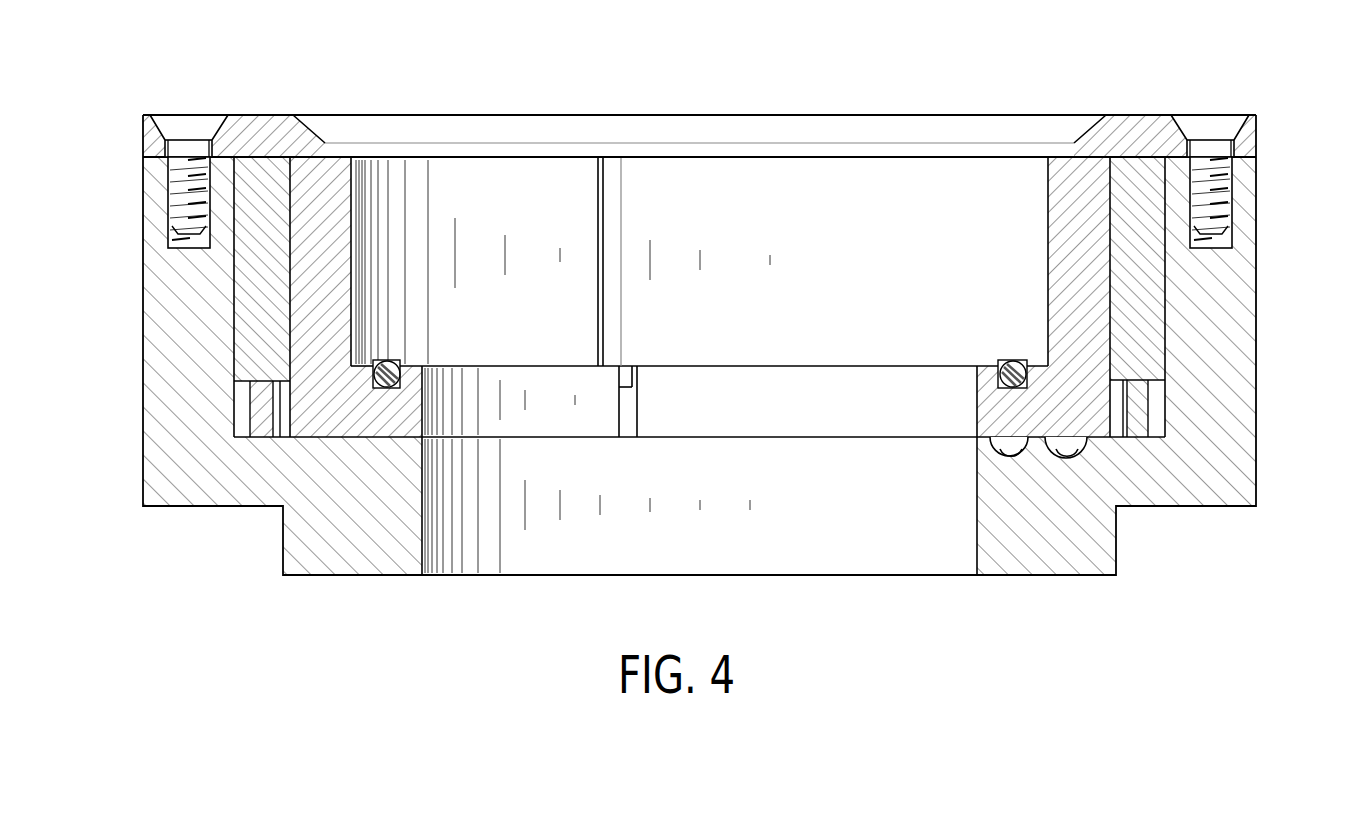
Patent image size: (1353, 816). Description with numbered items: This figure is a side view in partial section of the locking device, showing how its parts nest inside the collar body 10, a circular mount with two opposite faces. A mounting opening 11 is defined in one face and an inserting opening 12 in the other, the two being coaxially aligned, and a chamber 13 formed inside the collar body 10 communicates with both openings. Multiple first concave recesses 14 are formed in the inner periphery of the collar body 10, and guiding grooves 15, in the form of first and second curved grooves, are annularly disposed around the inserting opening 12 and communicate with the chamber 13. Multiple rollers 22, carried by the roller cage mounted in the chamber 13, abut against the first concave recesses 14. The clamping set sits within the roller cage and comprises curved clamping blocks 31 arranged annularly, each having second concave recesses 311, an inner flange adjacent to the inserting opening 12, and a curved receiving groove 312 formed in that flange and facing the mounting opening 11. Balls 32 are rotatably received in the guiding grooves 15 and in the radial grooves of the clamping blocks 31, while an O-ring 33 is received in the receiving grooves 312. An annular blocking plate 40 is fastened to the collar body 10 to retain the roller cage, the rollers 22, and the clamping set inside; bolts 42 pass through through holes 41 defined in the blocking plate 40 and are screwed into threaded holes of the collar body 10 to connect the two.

The collar body 10 is at (250, 560).
The mounting opening 11 is at (237, 172).
The inserting opening 12 is at (422, 545).
The chamber 13 is at (393, 437).
The first concave recesses 14 is at (235, 323).
The guiding grooves 15 is at (1010, 446).
The rollers 22 is at (1140, 325).
The clamping blocks 31 is at (574, 162).
The second concave recesses 311 is at (1100, 197).
The receiving groove 312 is at (375, 365).
The balls 32 is at (1078, 446).
The O-ring 33 is at (1010, 370).
The blocking plate 40 is at (1260, 137).
The through holes 41 is at (173, 145).
The bolts 42 is at (1225, 195).